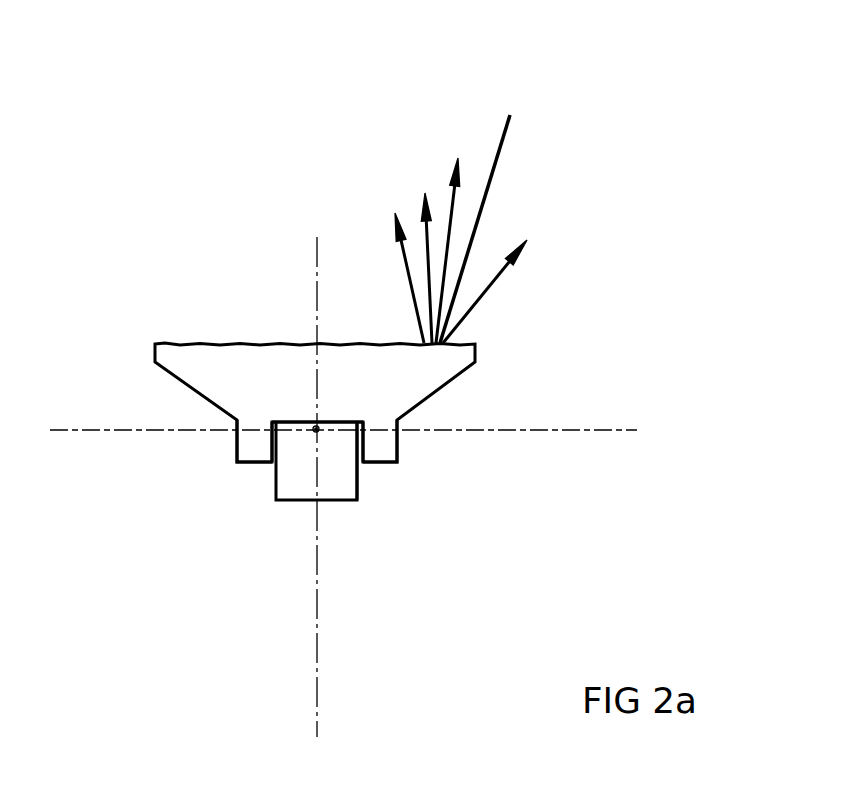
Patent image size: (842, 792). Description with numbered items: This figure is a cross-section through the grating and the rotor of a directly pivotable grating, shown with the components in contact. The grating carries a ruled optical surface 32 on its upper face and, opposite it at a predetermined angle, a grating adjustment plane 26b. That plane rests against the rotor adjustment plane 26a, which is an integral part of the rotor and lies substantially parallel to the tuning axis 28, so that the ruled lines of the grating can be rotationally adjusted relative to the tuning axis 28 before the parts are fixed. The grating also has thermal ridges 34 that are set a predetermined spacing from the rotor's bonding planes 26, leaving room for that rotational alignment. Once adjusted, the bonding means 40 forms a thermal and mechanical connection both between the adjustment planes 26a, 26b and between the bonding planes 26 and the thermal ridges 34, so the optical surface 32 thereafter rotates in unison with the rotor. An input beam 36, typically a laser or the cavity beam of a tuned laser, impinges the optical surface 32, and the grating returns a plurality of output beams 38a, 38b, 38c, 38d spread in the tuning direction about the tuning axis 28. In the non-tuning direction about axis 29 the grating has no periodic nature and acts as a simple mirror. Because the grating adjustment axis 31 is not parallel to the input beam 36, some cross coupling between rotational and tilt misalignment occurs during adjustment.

The bonding planes 26 is at (357, 488).
The rotor adjustment plane 26a is at (359, 465).
The grating adjustment plane 26b is at (358, 463).
The tuning axis 28 is at (316, 429).
The non-tuning axis 29 is at (492, 430).
The grating adjustment axis 31 is at (318, 673).
The optical surface 32 is at (207, 343).
The thermal ridges 34 is at (248, 462).
The input beam 36 is at (493, 172).
The output beam 38a is at (410, 290).
The output beam 38b is at (425, 253).
The output beam 38c is at (450, 200).
The output beam 38d is at (492, 290).
The bonding means 40 is at (273, 465).